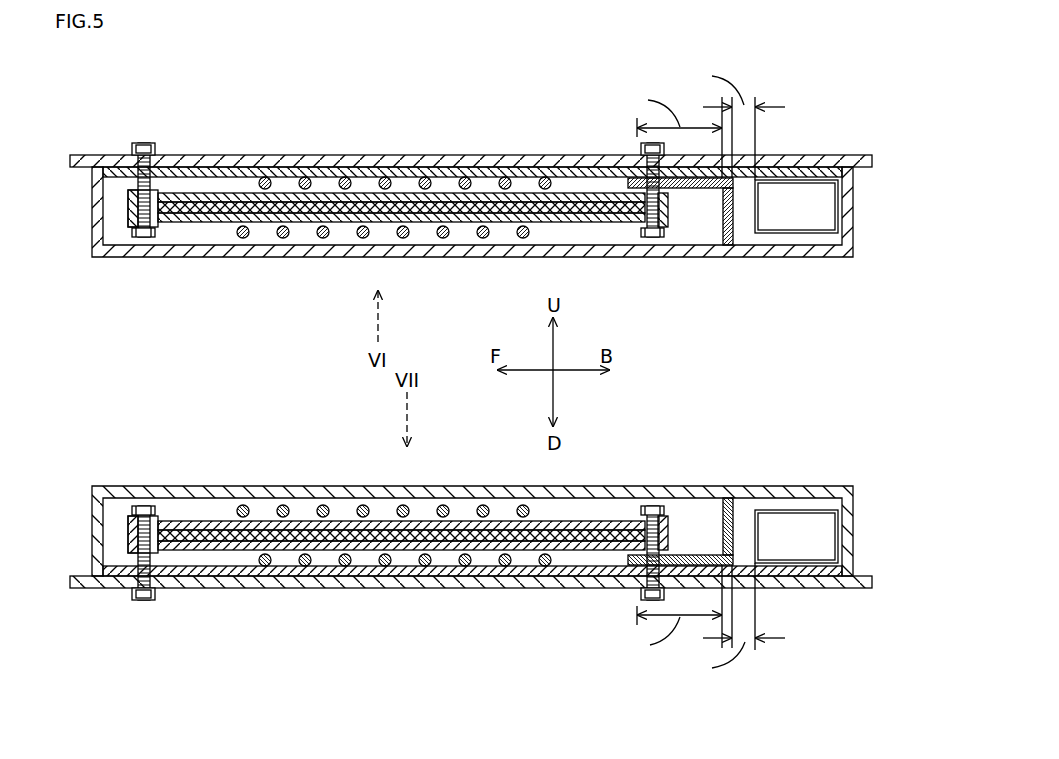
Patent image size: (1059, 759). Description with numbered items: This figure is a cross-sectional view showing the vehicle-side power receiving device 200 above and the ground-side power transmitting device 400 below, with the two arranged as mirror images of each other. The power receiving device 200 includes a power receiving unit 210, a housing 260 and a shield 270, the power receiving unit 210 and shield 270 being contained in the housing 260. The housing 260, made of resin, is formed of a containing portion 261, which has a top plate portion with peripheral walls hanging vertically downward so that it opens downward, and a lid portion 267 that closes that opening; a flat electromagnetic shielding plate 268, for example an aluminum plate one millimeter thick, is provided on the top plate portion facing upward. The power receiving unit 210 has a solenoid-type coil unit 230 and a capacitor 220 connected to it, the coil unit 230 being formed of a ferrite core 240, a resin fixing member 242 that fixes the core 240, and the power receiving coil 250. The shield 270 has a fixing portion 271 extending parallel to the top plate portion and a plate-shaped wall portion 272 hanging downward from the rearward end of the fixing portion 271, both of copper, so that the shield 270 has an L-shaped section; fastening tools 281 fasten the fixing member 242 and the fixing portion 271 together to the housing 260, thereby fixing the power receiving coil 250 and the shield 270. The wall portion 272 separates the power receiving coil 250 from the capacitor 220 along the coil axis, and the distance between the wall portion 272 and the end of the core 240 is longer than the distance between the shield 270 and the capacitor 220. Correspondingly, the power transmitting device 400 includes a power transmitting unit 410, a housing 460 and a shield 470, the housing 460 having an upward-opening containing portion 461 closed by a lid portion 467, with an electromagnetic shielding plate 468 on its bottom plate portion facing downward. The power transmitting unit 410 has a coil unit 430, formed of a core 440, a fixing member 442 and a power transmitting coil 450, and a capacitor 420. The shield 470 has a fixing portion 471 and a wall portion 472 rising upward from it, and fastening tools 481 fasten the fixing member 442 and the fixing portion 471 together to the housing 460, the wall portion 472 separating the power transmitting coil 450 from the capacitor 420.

The power receiving device 200 is at (255, 275).
The power receiving unit 210 is at (817, 46).
The capacitor 220 is at (797, 200).
The coil unit 230 is at (538, 78).
The core 240 is at (443, 206).
The fixing member 242 is at (367, 197).
The power receiving coil 250 is at (505, 177).
The housing 260 is at (253, 78).
The containing portion 261 is at (177, 170).
The lid portion 267 is at (222, 250).
The electromagnetic shielding plate 268 is at (103, 158).
The shield 270 is at (777, 319).
The fixing portion 271 is at (690, 188).
The wall portion 272 is at (735, 214).
The fastening tools 281 is at (655, 215).
The power transmitting device 400 is at (258, 472).
The power transmitting unit 410 is at (817, 697).
The capacitor 420 is at (797, 537).
The coil unit 430 is at (538, 667).
The core 440 is at (443, 537).
The fixing member 442 is at (367, 546).
The power transmitting coil 450 is at (505, 567).
The housing 460 is at (253, 667).
The containing portion 461 is at (176, 580).
The lid portion 467 is at (222, 494).
The electromagnetic shielding plate 468 is at (104, 586).
The shield 470 is at (777, 426).
The fixing portion 471 is at (690, 556).
The wall portion 472 is at (735, 530).
The fastening tools 481 is at (655, 527).